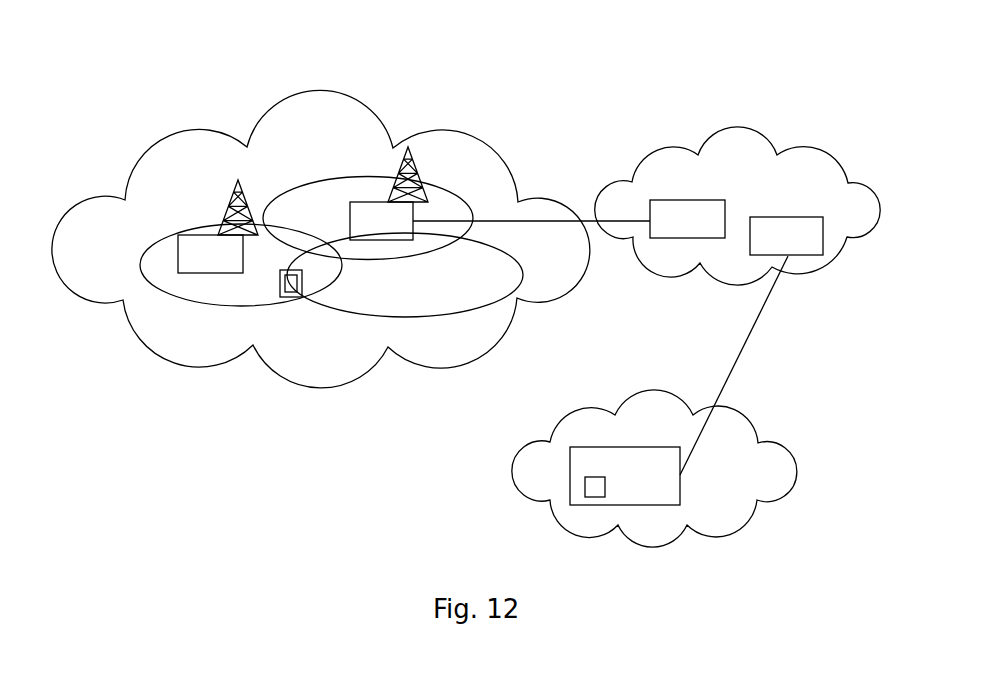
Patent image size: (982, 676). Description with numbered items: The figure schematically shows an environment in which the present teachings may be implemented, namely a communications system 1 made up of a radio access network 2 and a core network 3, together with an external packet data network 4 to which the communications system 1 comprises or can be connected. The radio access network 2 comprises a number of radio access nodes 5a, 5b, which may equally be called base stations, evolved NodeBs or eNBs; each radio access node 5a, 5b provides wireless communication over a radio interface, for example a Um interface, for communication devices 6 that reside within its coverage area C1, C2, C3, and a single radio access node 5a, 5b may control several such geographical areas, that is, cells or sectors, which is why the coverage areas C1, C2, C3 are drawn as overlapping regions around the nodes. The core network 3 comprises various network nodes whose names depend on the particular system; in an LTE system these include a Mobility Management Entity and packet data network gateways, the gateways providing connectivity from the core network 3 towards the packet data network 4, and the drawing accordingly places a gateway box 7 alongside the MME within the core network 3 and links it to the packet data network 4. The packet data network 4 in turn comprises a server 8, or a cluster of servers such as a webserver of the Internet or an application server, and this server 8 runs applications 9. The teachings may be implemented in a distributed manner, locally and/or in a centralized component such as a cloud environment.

The communications system 1 is at (490, 100).
The radio access network 2 is at (150, 158).
The core network 3 is at (651, 258).
The packet data network 4 is at (774, 466).
The radio access node 5a is at (243, 268).
The radio access node 5b is at (347, 177).
The communication device 6 is at (280, 292).
The gateway (GW) 7 is at (763, 217).
The server 8 is at (642, 493).
The application 9 is at (593, 490).
The coverage area C1 is at (165, 266).
The coverage area C2 is at (362, 300).
The coverage area C3 is at (300, 193).